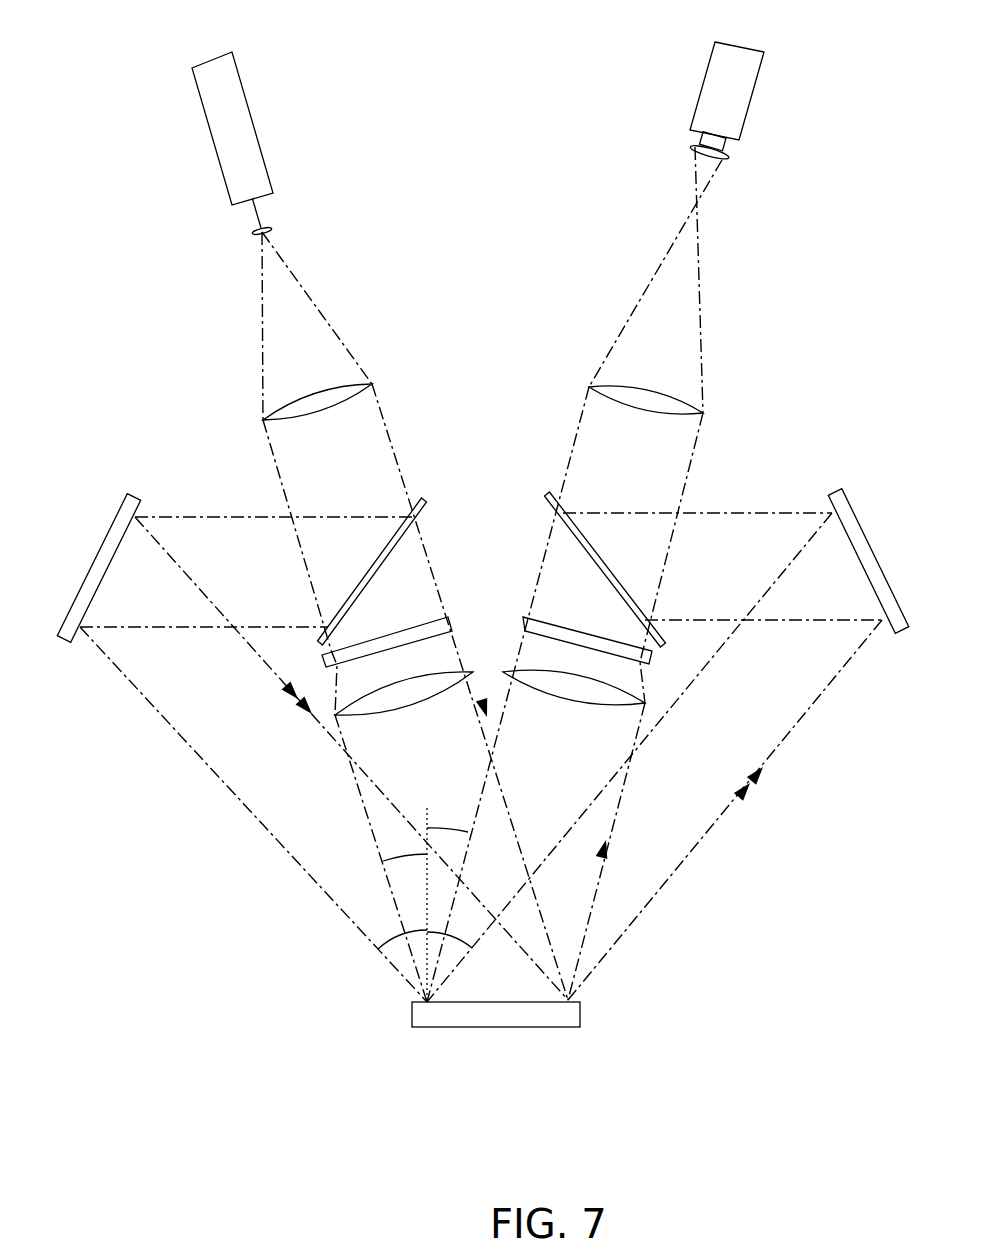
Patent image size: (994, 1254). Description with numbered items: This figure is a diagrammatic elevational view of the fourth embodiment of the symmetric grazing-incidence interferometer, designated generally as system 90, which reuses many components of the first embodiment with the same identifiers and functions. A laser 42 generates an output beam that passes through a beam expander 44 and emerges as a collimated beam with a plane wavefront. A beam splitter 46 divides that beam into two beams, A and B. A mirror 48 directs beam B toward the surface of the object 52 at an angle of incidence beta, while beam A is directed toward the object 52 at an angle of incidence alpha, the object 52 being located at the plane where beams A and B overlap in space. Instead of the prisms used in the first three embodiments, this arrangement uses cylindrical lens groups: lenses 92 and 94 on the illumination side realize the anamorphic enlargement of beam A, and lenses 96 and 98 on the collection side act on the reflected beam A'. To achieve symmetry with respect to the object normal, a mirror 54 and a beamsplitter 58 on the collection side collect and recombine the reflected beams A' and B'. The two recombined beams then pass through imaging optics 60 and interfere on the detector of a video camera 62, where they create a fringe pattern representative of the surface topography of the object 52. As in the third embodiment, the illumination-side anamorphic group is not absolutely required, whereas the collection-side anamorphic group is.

The laser 42 is at (260, 153).
The beam expander 44 is at (295, 402).
The beam splitter 46 is at (355, 587).
The mirror 48 is at (122, 503).
The object 52 is at (430, 1027).
The mirror 54 is at (845, 495).
The beamsplitter 58 is at (628, 598).
The imaging optics 60 is at (678, 400).
The video camera 62 is at (747, 107).
The system 90 is at (515, 52).
The lens 92 is at (323, 655).
The lens 94 is at (370, 715).
The lens 96 is at (652, 658).
The lens 98 is at (613, 707).